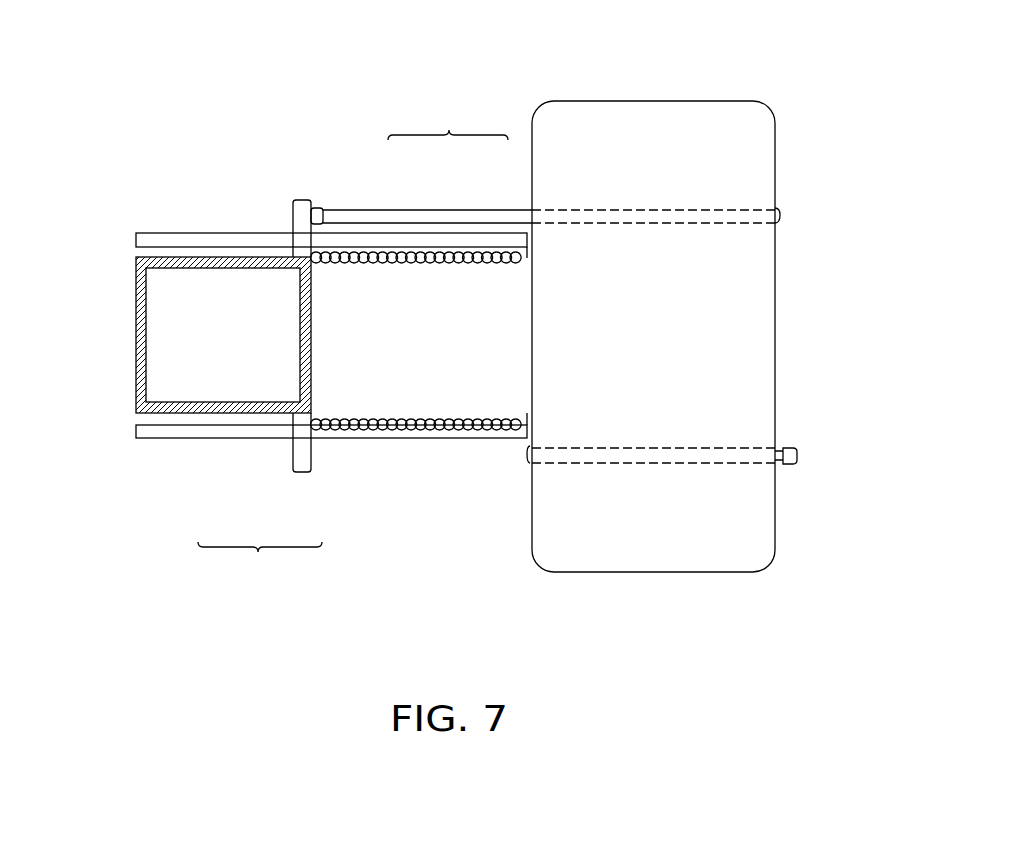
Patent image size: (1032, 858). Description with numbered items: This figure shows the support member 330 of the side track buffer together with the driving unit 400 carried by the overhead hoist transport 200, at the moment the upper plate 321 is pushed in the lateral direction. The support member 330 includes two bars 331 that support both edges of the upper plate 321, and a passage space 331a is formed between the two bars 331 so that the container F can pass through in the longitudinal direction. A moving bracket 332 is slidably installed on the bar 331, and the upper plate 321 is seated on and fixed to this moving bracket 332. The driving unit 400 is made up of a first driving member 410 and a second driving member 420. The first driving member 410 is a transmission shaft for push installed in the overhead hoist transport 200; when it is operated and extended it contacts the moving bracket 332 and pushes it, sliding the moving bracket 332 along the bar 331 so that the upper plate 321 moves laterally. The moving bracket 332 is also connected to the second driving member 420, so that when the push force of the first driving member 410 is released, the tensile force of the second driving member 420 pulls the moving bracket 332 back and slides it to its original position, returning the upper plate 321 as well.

The overhead hoist transport 200 is at (651, 91).
The driving unit 400 is at (448, 118).
The first driving member 410 is at (482, 209).
The second driving member 420 is at (391, 257).
The support member 330 is at (260, 567).
The bar 331 is at (176, 232).
The passage space 331a is at (490, 374).
The moving bracket 332 is at (298, 198).
The upper plate 321 is at (135, 366).
The container F is at (157, 305).